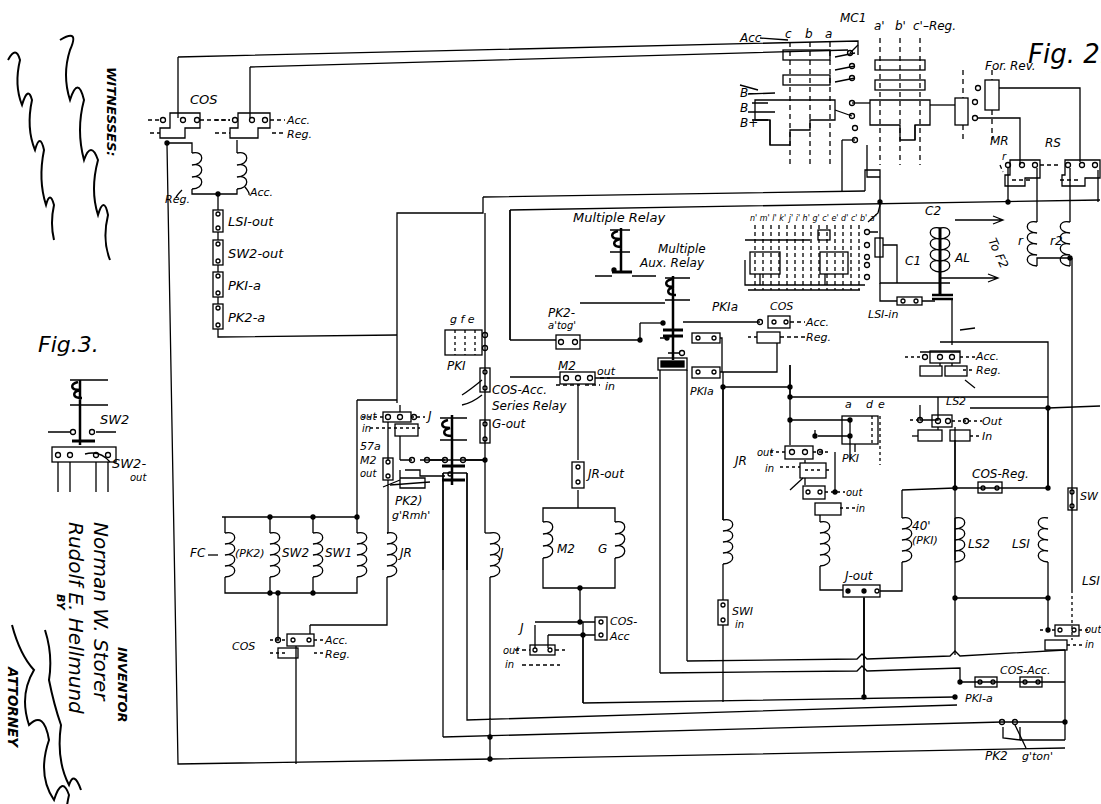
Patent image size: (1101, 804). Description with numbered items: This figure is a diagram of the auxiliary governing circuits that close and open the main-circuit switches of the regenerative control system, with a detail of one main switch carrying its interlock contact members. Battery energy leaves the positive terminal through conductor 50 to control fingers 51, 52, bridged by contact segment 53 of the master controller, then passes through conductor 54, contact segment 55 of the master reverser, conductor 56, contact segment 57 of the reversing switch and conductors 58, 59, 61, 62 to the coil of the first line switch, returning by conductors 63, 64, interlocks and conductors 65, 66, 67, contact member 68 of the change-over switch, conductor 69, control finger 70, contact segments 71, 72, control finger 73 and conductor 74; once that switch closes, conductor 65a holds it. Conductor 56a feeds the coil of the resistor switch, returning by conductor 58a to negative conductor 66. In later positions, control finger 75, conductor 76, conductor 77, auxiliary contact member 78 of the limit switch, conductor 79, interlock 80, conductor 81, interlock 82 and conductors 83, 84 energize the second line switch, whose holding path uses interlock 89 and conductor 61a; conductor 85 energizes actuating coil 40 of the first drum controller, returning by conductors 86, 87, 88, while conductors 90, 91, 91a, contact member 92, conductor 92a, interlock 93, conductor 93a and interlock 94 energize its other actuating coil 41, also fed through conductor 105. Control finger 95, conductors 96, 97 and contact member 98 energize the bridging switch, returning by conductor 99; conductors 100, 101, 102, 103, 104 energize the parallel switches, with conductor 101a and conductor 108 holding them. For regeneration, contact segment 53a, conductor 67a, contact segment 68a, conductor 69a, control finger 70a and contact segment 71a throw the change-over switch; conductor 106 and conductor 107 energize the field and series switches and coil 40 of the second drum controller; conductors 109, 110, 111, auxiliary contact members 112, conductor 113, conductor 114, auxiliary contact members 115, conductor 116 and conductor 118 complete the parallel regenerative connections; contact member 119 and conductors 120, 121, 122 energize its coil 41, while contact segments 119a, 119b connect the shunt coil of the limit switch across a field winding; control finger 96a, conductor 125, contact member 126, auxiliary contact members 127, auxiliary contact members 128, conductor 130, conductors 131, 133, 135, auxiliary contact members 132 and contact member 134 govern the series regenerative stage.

The actuating coil 40 is at (294, 555).
The actuating coil 41 is at (767, 493).
The conductor 50 is at (792, 122).
The control finger 51 is at (853, 102).
The control finger 52 is at (853, 97).
The contact segment 53 is at (762, 140).
The contact segment 53a is at (931, 140).
The conductor 54 is at (942, 95).
The contact segment 55 is at (908, 120).
The conductor 56 is at (1020, 136).
The conductor 56a is at (406, 277).
The contact segment 57 is at (1038, 195).
The conductor 58 is at (1000, 182).
The conductor 58a is at (294, 662).
The conductor 59 is at (1072, 181).
The conductor 61 is at (1046, 452).
The conductor 61a is at (1033, 412).
The conductor 62 is at (1046, 502).
The conductor 63 is at (1008, 598).
The conductor 64 is at (952, 640).
The conductor 65 is at (1066, 718).
The conductor 65a is at (1066, 658).
The negative conductor 66 is at (172, 418).
The conductor 67 is at (218, 168).
The conductor 67a is at (370, 333).
The contact member 68 is at (255, 108).
The contact segment 68a is at (160, 150).
The conductor 69 is at (250, 82).
The conductor 69a is at (184, 76).
The control finger 70 is at (861, 47).
The control finger 70a is at (840, 66).
The contact segment 71 is at (783, 55).
The contact segment 71a is at (925, 65).
The contact segment 72 is at (783, 79).
The control finger 73 is at (843, 78).
The conductor 74 is at (750, 83).
The control finger 75 is at (856, 148).
The conductor 76 is at (908, 242).
The conductor 77 is at (880, 300).
The auxiliary contact member 78 is at (962, 280).
The conductor 79 is at (955, 333).
The interlock COS—Acc. 80 is at (915, 358).
The conductor 81 is at (925, 402).
The interlock LS2 82 is at (950, 487).
The conductor 83 is at (952, 476).
The conductor 84 is at (952, 498).
The conductor 85 is at (912, 490).
The conductor 86 is at (866, 652).
The conductor 87 is at (912, 697).
The conductor 88 is at (958, 684).
The interlock LS2—in 89 is at (915, 447).
The conductor 90 is at (843, 395).
The conductor 91 is at (787, 415).
The conductor 91a is at (825, 432).
The contact member PK1—a to d 92 is at (849, 442).
The conductor 92a is at (811, 436).
The interlock JR—in 93 is at (825, 472).
The conductor 93a is at (782, 486).
The interlock SW1—out 94 is at (800, 498).
The control finger 95 is at (848, 150).
The conductor 96 is at (835, 180).
The control finger 96a is at (862, 200).
The conductor 97 is at (675, 190).
The contact member PK1—e to g 98 is at (445, 342).
The conductor 99 is at (712, 617).
The conductor 100 is at (792, 375).
The conductor 101 is at (757, 345).
The conductor 101a is at (535, 369).
The conductor 102 is at (591, 422).
The conductor 103 is at (578, 614).
The conductor 104 is at (582, 692).
The conductor 105 is at (786, 441).
The conductor 106 is at (390, 400).
The conductor 107 is at (276, 616).
The conductor 108 is at (524, 275).
The conductor 109 is at (533, 331).
The conductor 110 is at (611, 332).
The conductor 111 is at (659, 318).
The auxiliary contact members 112 is at (716, 308).
The conductor 113 is at (744, 322).
The conductor 114 is at (877, 647).
The auxiliary contact members 115 is at (690, 503).
The conductor 116 is at (692, 438).
The conductor 118 is at (1046, 376).
The contact member 119 is at (818, 240).
The contact segment 119a is at (822, 290).
The contact segment 119b is at (759, 290).
The conductor 120 is at (981, 388).
The conductor 121 is at (724, 458).
The conductor 122 is at (720, 686).
The conductor 125 is at (423, 434).
The contact member PK2—g' and h' 126 is at (380, 495).
The auxiliary contact members 127 is at (486, 462).
The auxiliary contact members 128 is at (660, 348).
The conductor 130 is at (742, 370).
The conductor 131 is at (730, 722).
The auxiliary contact members 132 is at (453, 492).
The conductor 133 is at (440, 612).
The contact member PK2—g' to n' 134 is at (1002, 733).
The conductor 135 is at (1052, 722).